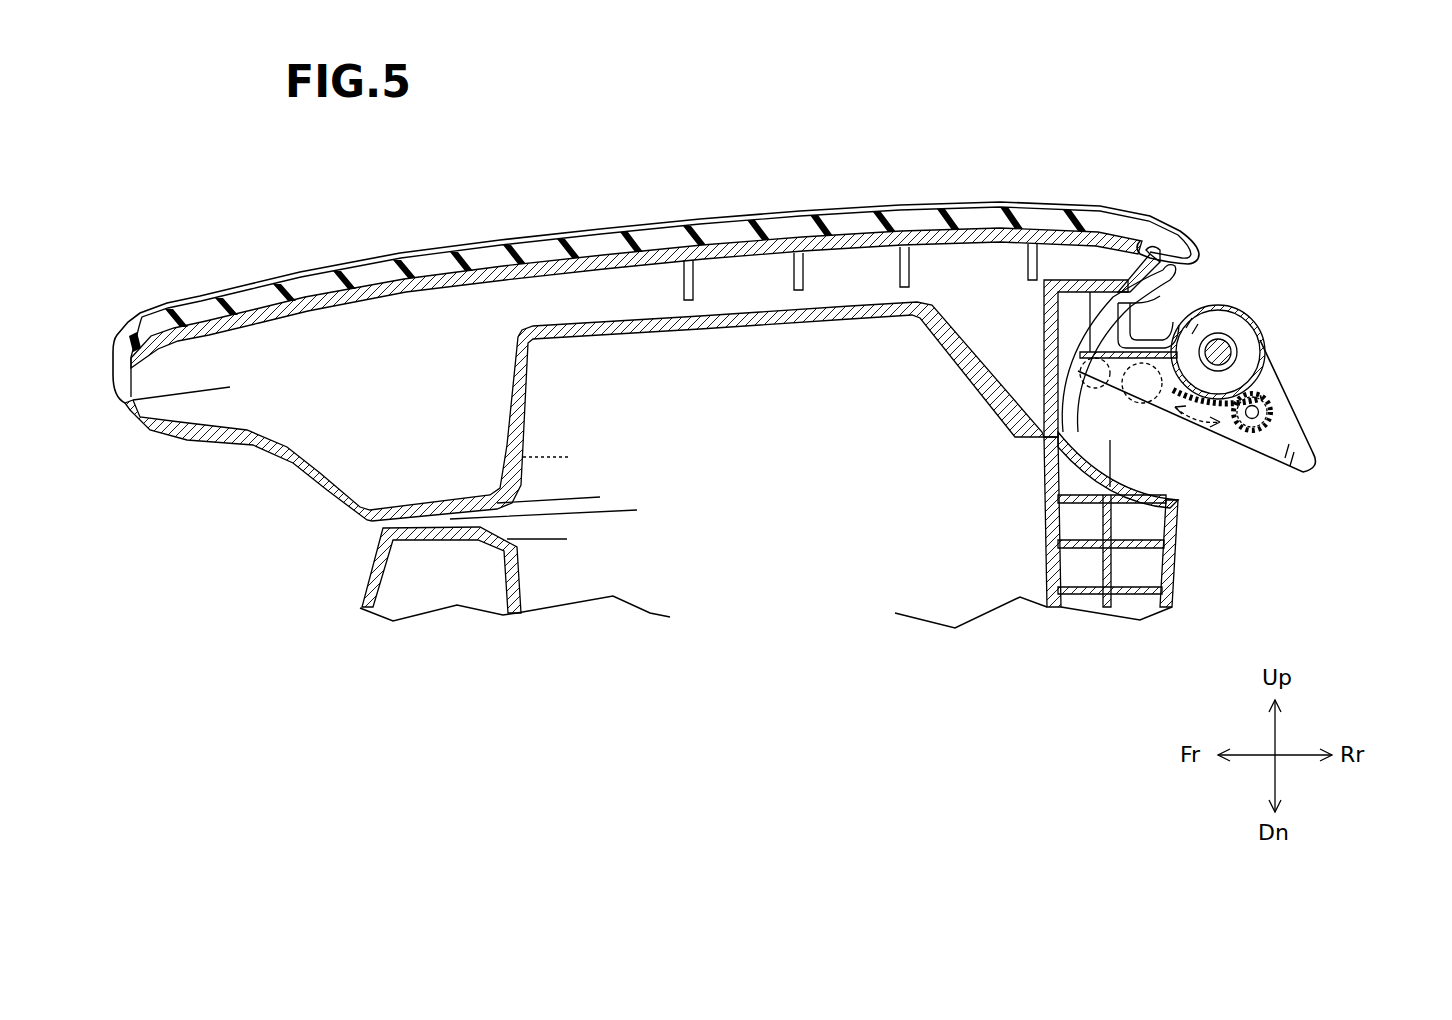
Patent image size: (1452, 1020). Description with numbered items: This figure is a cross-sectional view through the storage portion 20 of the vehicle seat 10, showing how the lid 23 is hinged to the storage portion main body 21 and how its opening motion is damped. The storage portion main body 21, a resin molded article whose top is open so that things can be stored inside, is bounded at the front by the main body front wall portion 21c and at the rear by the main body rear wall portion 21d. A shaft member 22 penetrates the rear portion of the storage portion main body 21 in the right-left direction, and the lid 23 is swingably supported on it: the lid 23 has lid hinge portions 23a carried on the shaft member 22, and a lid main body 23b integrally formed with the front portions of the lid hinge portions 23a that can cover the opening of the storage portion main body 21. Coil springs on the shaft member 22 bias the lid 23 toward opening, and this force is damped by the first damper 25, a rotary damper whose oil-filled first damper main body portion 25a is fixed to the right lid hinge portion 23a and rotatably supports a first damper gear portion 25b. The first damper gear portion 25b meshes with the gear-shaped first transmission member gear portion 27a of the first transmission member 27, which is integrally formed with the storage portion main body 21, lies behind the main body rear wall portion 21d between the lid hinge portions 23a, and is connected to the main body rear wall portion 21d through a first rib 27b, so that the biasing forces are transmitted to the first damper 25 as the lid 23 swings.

The vehicle seat 10 is at (1169, 116).
The storage portion 20 is at (767, 330).
The storage portion main body 21 is at (745, 530).
The main body front wall portion 21c is at (370, 564).
The main body rear wall portion 21d is at (1176, 553).
The shaft member 22 is at (1233, 341).
The lid 23 is at (656, 335).
The lid hinge portion 23a is at (1318, 461).
The lid main body 23b is at (631, 235).
The first damper 25 is at (1347, 316).
The first damper main body portion 25a is at (1273, 413).
The first damper gear portion 25b is at (1267, 393).
The first transmission member 27 is at (1213, 305).
The first transmission member gear portion 27a is at (1142, 384).
The first rib 27b is at (1043, 373).